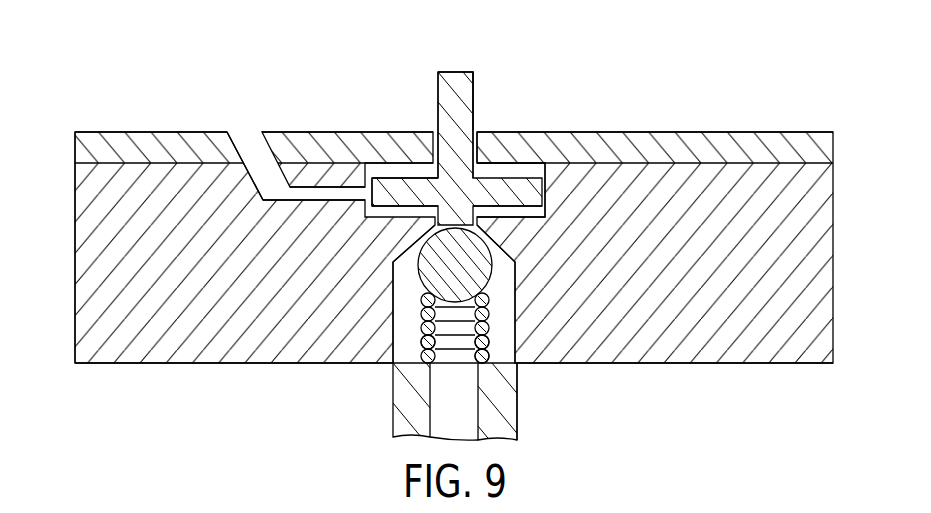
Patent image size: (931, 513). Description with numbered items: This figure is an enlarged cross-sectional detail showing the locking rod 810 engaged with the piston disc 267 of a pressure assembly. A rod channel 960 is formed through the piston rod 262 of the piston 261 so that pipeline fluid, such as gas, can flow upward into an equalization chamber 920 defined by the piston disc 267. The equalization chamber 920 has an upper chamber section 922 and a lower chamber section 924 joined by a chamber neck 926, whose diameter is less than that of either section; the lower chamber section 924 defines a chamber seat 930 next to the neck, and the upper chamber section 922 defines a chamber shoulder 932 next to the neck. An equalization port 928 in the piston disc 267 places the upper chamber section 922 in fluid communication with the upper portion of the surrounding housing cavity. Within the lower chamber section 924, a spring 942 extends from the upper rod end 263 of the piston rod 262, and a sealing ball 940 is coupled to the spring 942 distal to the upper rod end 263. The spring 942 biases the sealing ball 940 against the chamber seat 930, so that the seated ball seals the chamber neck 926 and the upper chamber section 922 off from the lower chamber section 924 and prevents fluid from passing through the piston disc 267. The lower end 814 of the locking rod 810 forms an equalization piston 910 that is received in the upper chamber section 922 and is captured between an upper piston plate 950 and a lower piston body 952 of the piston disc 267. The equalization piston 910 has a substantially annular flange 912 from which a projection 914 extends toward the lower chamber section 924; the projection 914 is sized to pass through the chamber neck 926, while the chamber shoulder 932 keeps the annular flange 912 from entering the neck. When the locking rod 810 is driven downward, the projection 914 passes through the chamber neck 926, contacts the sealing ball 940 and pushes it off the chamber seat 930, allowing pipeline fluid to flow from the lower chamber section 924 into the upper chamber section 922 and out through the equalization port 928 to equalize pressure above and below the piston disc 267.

The piston disc 267 is at (77, 232).
The locking rod 810 is at (453, 88).
The lower end of the locking rod 814 is at (453, 117).
The equalization piston 910 is at (472, 125).
The annular flange 912 is at (570, 138).
The projection 914 is at (408, 203).
The equalization chamber 920 is at (406, 311).
The upper chamber section 922 is at (497, 170).
The lower chamber section 924 is at (406, 344).
The chamber neck 926 is at (476, 228).
The equalization port 928 is at (253, 143).
The chamber seat 930 is at (398, 260).
The chamber shoulder 932 is at (415, 192).
The sealing ball 940 is at (490, 284).
The spring 942 is at (488, 356).
The upper piston plate 950 is at (822, 145).
The lower piston body 952 is at (820, 225).
The rod channel 960 is at (443, 418).
The piston 261 is at (503, 397).
The piston rod 262 is at (503, 432).
The upper rod end 263 is at (410, 365).